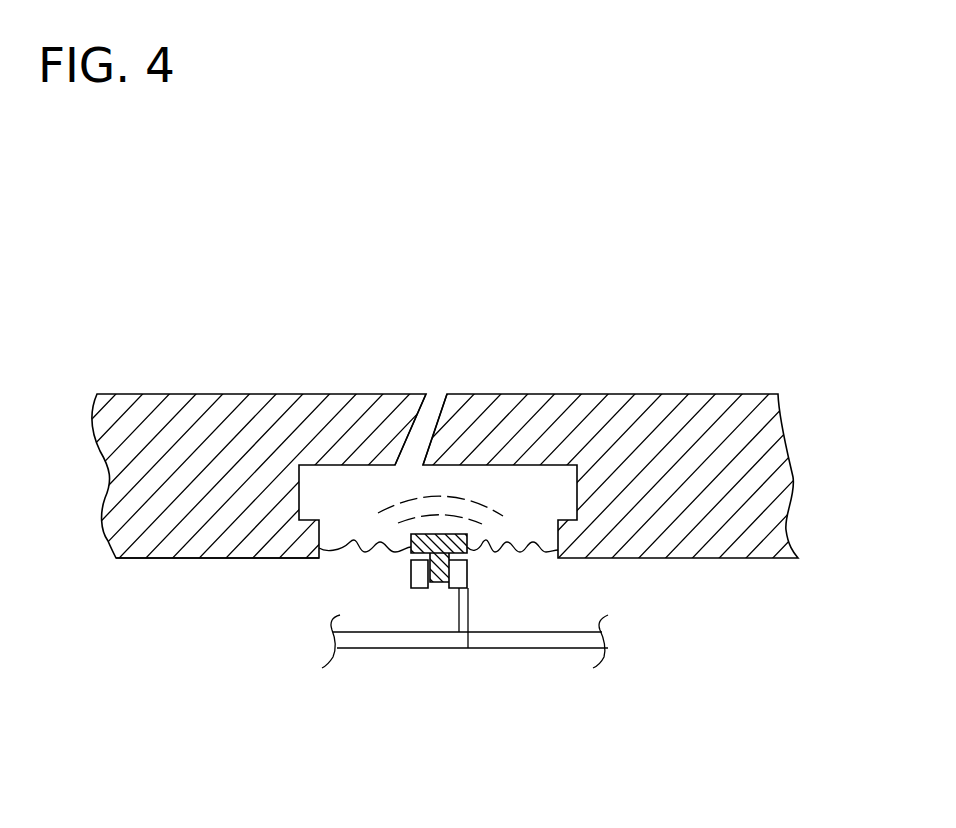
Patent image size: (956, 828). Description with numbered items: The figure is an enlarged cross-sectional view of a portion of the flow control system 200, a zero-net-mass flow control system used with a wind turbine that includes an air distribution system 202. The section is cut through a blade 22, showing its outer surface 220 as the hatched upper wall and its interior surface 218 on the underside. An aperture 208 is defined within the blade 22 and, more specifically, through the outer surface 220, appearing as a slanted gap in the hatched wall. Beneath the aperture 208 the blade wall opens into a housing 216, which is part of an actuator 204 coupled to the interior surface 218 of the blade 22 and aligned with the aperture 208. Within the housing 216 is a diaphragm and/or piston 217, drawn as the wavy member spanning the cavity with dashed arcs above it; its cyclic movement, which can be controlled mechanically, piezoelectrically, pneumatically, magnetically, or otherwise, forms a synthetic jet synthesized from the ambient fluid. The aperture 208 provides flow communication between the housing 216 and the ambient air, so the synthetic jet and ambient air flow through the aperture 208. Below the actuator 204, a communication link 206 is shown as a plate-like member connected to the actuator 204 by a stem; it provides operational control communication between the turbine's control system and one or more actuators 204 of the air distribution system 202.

The flow control system 200 is at (720, 175).
The air distribution system 202 is at (681, 243).
The blade 22 is at (748, 433).
The outer surface 220 is at (162, 393).
The aperture 208 is at (439, 372).
The housing 216 is at (587, 487).
The diaphragm and/or piston 217 is at (518, 553).
The interior surface 218 is at (158, 559).
The actuator 204 is at (300, 603).
The communication link 206 is at (507, 641).